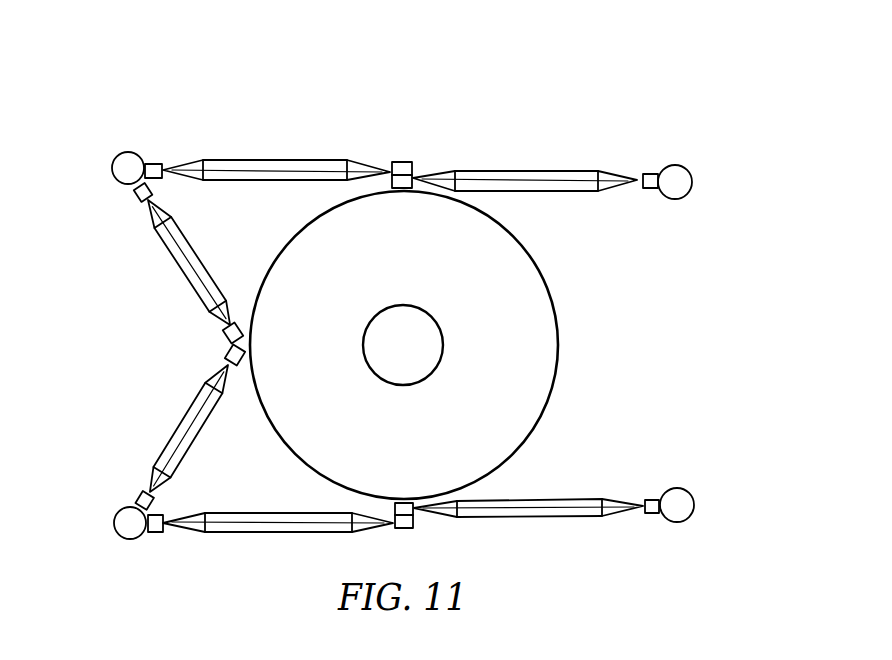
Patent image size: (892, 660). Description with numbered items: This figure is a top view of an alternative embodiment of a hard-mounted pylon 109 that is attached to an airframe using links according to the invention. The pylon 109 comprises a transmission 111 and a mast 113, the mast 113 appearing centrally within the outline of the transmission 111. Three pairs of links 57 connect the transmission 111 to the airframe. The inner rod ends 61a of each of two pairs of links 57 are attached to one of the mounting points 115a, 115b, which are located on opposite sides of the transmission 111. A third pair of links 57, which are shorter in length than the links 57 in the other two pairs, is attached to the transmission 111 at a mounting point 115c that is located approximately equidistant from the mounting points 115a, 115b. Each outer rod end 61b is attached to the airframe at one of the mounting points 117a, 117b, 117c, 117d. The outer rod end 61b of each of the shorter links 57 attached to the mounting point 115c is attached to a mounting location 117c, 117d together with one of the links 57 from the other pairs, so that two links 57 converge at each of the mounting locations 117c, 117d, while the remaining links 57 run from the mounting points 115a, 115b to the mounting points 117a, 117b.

The pylon 109 is at (368, 116).
The link 57 is at (272, 158).
The transmission 111 is at (559, 341).
The mast 113 is at (443, 345).
The mounting point 115a is at (403, 502).
The mounting point 115b is at (405, 188).
The mounting point 115c is at (247, 340).
The mounting point 117a is at (691, 174).
The mounting point 117b is at (692, 513).
The mounting location 117c is at (116, 531).
The mounting location 117d is at (113, 162).
The inner rod end 61a is at (414, 522).
The outer rod end 61b is at (155, 533).